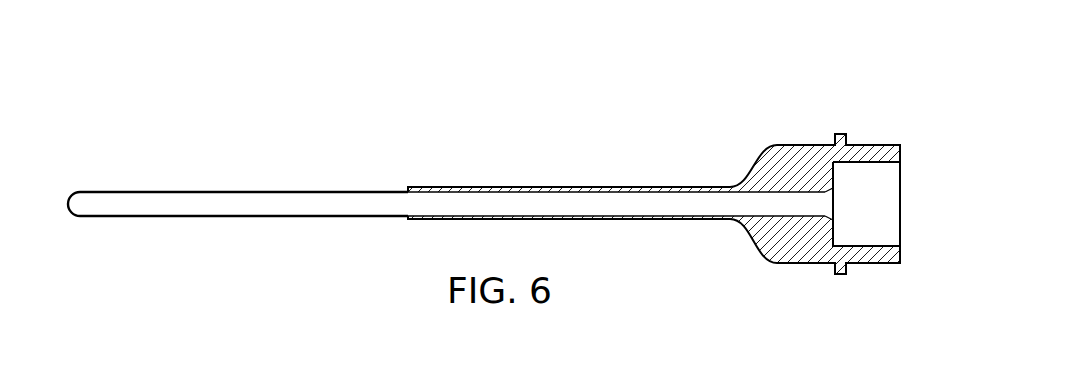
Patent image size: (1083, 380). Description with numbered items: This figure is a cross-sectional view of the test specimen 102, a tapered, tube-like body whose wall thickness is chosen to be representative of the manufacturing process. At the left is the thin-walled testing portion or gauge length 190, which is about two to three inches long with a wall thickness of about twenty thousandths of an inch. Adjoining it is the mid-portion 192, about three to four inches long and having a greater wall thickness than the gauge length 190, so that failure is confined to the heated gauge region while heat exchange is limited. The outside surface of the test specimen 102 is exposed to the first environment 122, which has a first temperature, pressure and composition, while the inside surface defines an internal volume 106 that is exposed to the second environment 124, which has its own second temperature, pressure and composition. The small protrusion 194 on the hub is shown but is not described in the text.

The test specimen 102 is at (655, 160).
The internal volume 106 is at (905, 199).
The first environment 122 is at (592, 169).
The second environment 124 is at (867, 287).
The gauge length 190 is at (238, 153).
The mid-portion 192 is at (616, 155).
The tab / protrusion 194 is at (840, 133).